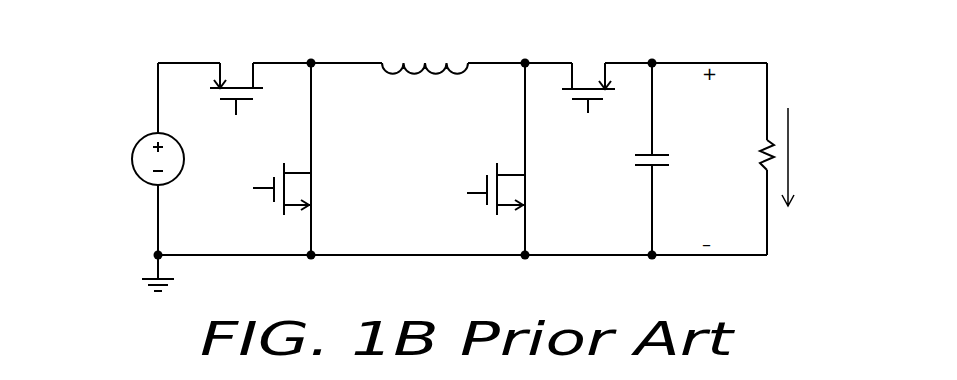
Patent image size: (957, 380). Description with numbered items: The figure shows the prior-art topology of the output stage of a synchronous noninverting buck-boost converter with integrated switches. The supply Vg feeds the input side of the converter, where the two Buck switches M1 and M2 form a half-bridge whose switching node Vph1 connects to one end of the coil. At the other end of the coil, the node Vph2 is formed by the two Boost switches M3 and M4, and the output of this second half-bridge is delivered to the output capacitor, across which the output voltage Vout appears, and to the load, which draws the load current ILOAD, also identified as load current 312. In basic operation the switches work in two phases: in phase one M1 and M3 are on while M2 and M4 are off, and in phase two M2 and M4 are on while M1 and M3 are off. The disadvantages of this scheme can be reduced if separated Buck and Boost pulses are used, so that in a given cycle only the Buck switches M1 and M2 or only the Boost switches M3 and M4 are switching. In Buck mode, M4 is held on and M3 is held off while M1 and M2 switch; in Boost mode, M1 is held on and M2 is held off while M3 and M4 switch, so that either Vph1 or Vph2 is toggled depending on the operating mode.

The load current 312 is at (768, 80).
The Buck switch M1 is at (236, 94).
The Buck switch M2 is at (285, 189).
The Boost switch M3 is at (499, 189).
The Boost switch M4 is at (588, 94).
The supply voltage source Vg is at (144, 159).
The output voltage Vout is at (678, 159).
The phase-1 node Vph1 is at (314, 139).
The phase-2 node Vph2 is at (527, 139).
The load current ILOAD is at (817, 157).